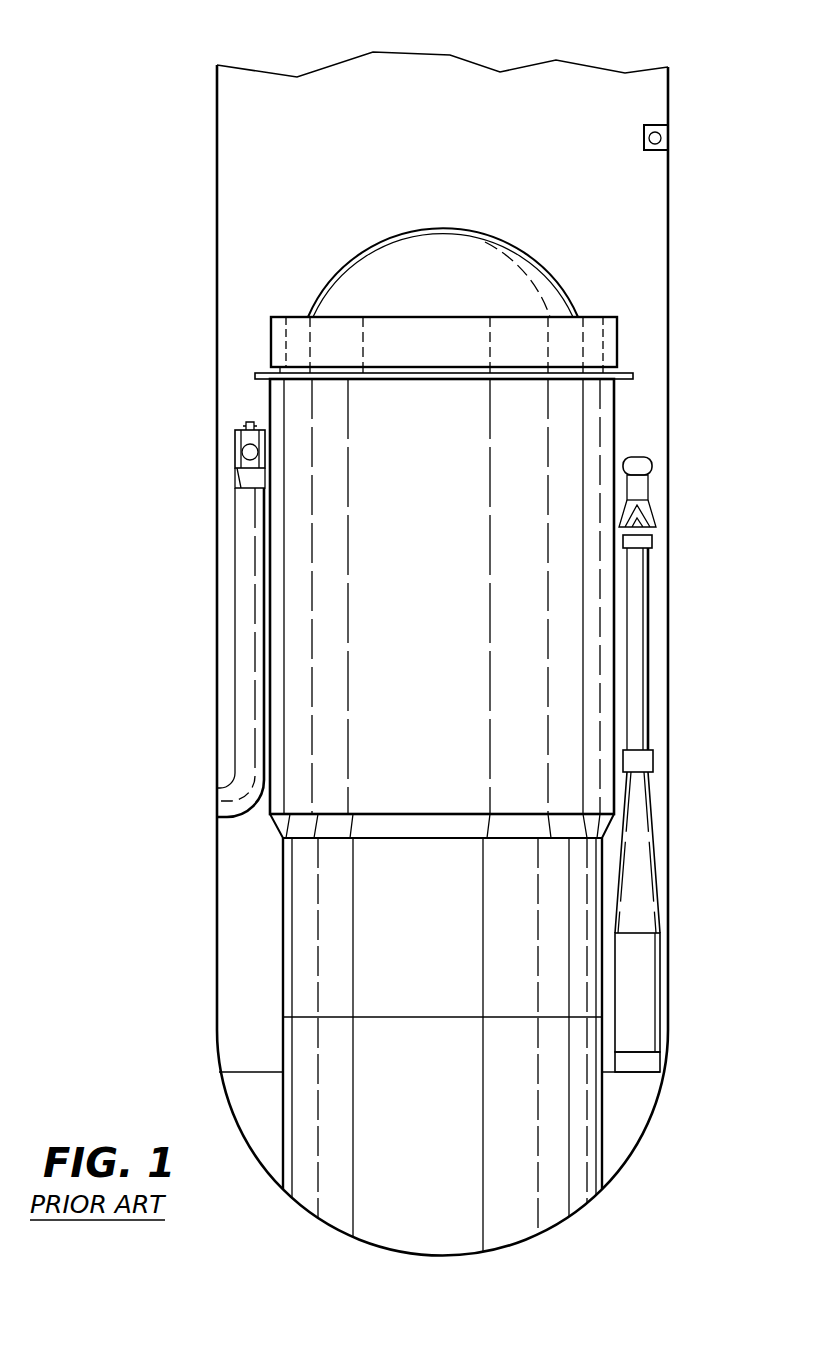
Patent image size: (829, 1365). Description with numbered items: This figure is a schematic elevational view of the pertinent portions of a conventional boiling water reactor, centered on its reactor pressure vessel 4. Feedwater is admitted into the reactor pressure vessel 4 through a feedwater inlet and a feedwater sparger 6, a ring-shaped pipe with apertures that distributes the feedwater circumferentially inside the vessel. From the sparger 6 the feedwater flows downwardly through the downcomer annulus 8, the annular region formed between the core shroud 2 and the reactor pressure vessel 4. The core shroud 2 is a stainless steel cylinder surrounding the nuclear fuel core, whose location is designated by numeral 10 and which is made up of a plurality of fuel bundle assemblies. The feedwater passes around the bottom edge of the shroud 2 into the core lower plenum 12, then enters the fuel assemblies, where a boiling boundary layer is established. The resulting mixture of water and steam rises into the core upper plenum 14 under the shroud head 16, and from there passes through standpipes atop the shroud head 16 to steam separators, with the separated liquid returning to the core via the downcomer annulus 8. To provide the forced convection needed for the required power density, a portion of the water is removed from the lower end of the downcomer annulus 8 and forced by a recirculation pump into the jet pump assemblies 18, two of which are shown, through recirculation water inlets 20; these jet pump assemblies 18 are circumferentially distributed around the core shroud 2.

The core shroud 2 is at (308, 925).
The reactor pressure vessel 4 is at (216, 1003).
The feedwater sparger 6 is at (661, 138).
The downcomer annulus 8 is at (660, 640).
The nuclear fuel core 10 is at (459, 666).
The core lower plenum 12 is at (459, 1144).
The core upper plenum 14 is at (459, 351).
The shroud head 16 is at (438, 243).
The jet pump assemblies 18 is at (243, 614).
The recirculation water inlets 20 is at (232, 801).